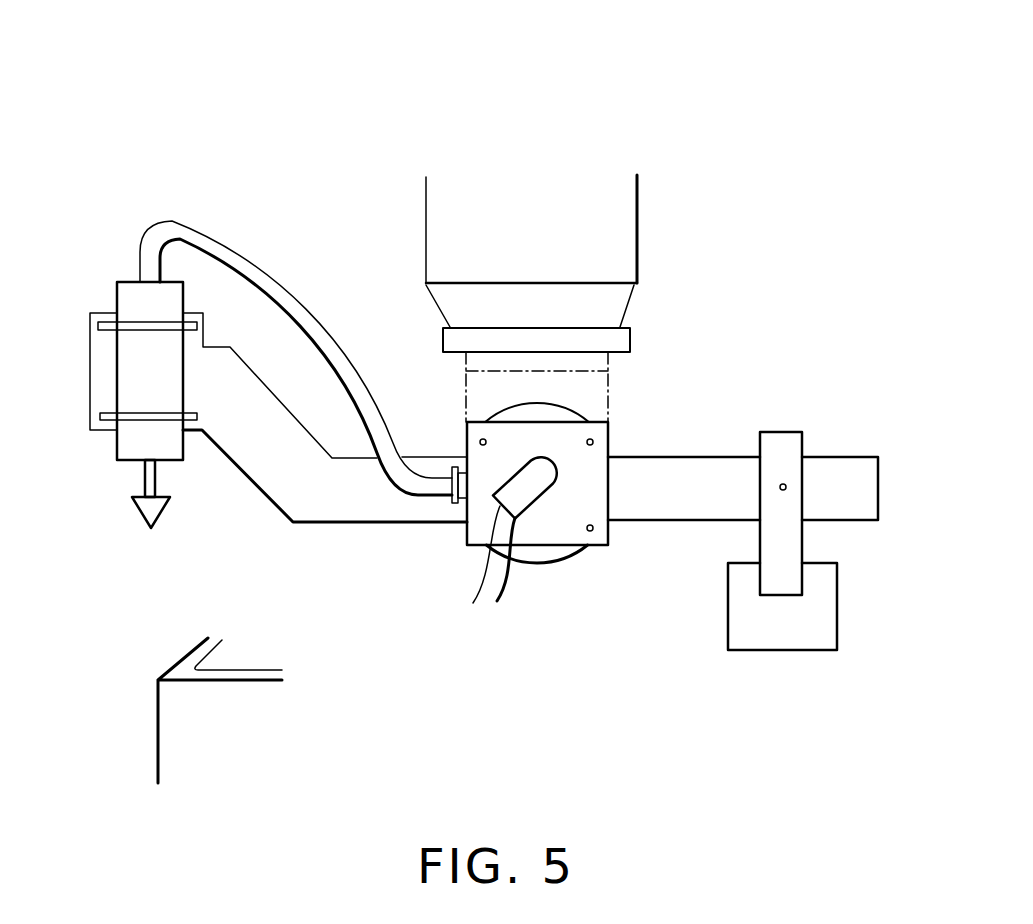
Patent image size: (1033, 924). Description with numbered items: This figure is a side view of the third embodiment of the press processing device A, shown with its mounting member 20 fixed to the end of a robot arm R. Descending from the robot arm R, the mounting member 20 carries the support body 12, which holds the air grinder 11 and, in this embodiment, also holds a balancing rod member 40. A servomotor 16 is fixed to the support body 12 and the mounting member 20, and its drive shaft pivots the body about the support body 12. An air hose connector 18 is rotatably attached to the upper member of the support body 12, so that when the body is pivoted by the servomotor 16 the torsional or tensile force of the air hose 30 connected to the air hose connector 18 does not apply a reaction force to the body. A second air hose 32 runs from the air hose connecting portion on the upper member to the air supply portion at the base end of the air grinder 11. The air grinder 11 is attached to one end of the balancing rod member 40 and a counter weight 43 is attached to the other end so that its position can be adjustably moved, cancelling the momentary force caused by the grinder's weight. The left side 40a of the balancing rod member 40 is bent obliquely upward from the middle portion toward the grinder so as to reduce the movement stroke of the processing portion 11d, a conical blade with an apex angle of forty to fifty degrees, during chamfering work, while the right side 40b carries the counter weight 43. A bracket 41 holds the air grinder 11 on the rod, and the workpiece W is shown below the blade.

The press processing device A is at (824, 60).
The robot arm R is at (642, 232).
The mounting member 20 is at (608, 393).
The bracket 41 is at (100, 313).
The air grinder 11 is at (110, 445).
The processing portion 11d is at (140, 503).
The air hose 32 is at (253, 254).
The balancing rod member 40 is at (530, 514).
The left side of the balancing rod member 40a is at (270, 500).
The arm horizontal portion 40b is at (688, 522).
The air hose connector 18 is at (570, 565).
The support body 12 is at (460, 536).
The servomotor 16 is at (547, 495).
The air hose 30 is at (508, 593).
The counter weight 43 is at (732, 628).
The workpiece W is at (158, 713).